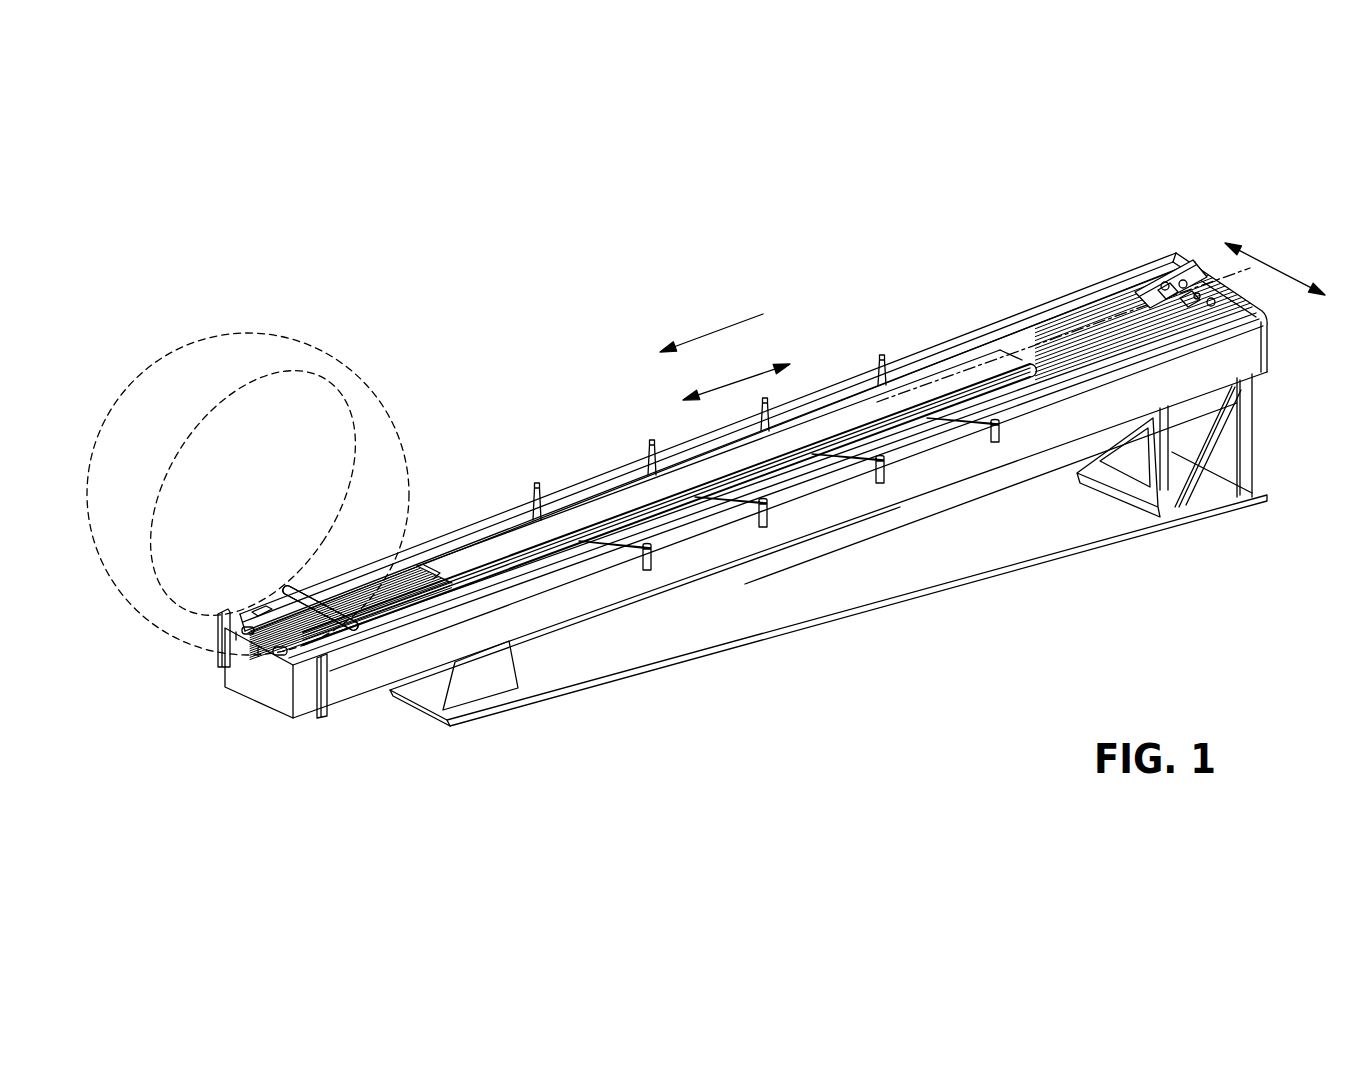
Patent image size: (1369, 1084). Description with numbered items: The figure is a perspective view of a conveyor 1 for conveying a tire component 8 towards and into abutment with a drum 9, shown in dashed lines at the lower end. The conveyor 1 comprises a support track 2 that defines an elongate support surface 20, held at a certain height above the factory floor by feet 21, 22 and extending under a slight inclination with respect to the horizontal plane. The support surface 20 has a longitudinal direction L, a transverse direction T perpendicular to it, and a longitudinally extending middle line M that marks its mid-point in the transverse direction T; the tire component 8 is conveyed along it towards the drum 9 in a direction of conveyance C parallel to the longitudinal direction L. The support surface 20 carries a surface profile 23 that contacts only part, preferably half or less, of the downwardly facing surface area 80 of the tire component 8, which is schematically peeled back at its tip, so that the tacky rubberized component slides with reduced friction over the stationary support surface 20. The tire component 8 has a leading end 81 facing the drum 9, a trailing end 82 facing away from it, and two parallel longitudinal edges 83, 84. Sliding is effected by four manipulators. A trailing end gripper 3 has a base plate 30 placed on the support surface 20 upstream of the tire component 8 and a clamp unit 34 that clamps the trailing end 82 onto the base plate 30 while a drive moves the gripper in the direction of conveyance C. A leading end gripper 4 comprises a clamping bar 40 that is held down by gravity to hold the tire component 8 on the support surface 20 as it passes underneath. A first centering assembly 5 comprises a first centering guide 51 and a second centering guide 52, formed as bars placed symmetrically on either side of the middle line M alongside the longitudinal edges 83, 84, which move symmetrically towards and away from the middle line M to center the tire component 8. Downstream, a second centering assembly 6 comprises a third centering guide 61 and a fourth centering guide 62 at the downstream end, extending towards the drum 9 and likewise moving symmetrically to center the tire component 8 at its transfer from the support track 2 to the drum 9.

The conveyor 1 is at (628, 296).
The support track 2 is at (1087, 290).
The support surface 20 is at (1057, 327).
The foot 21 is at (487, 687).
The foot 22 is at (1210, 503).
The surface profile 23 is at (1122, 313).
The trailing end gripper 3 is at (1147, 290).
The base plate 30 is at (1210, 313).
The clamp unit 34 is at (1197, 270).
The leading end gripper 4 is at (350, 613).
The clamping bar or rod 40 is at (310, 553).
The first centering assembly 5 is at (860, 427).
The first centering guide 51 is at (600, 517).
The second centering guide 52 is at (513, 527).
The second centering assembly 6 is at (278, 652).
The third centering guide 61 is at (325, 672).
The fourth centering guide 62 is at (255, 612).
The tire component 8 is at (913, 393).
The downwardly facing surface area 80 is at (1022, 367).
The leading end 81 is at (437, 562).
The trailing end 82 is at (1030, 367).
The first longitudinal edge 83 is at (663, 513).
The second longitudinal edge 84 is at (597, 505).
The drum 9 is at (190, 360).
The direction of conveyance C is at (711, 322).
The longitudinal direction L is at (736, 371).
The transverse direction T is at (1275, 255).
The middle line M is at (1010, 360).